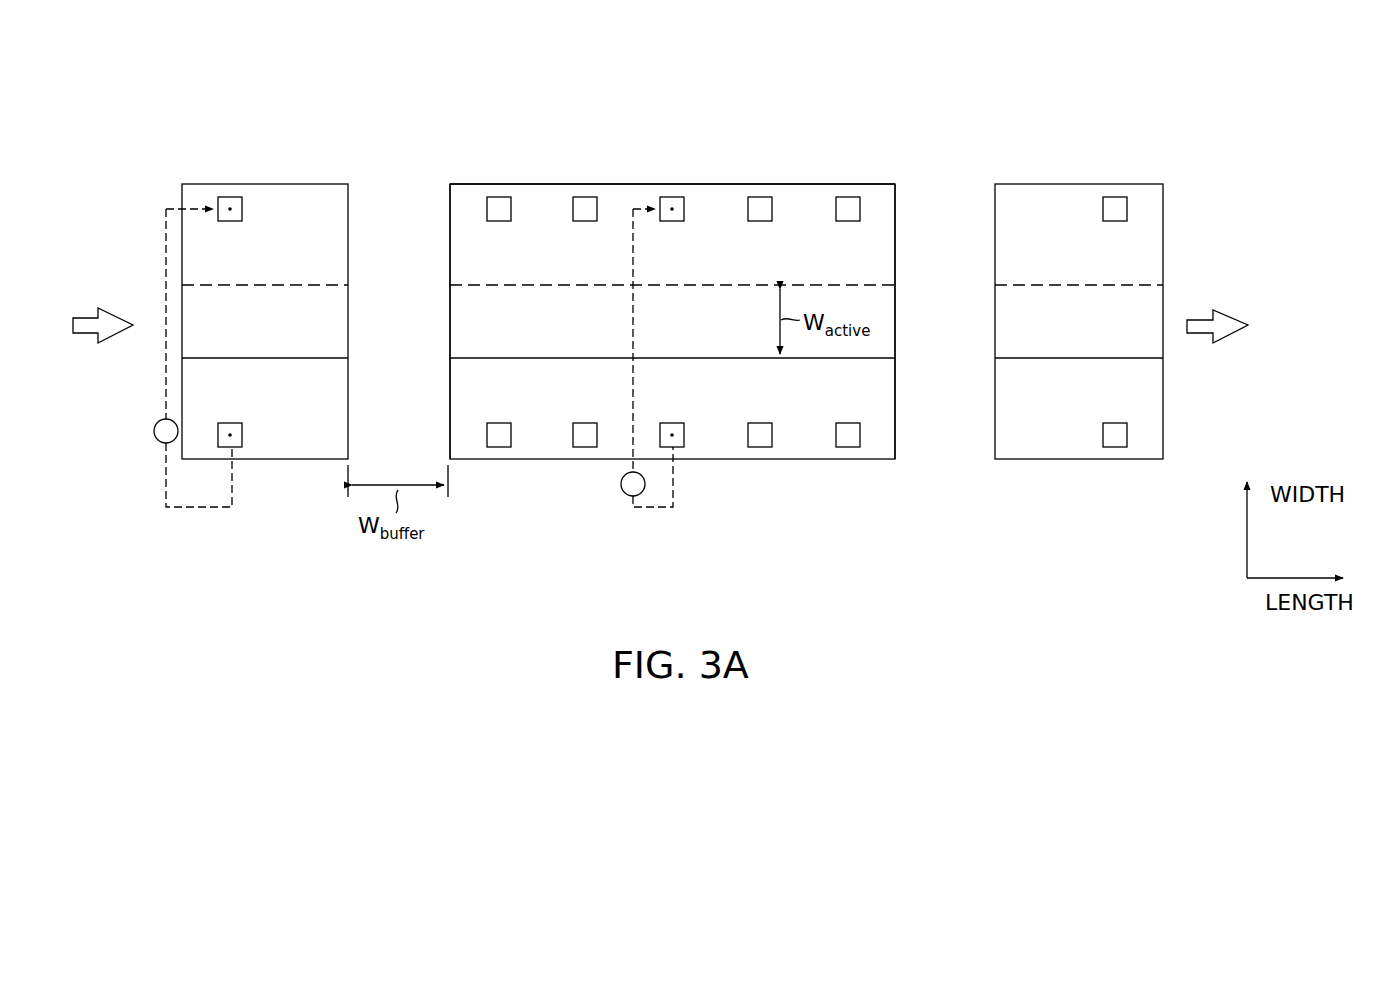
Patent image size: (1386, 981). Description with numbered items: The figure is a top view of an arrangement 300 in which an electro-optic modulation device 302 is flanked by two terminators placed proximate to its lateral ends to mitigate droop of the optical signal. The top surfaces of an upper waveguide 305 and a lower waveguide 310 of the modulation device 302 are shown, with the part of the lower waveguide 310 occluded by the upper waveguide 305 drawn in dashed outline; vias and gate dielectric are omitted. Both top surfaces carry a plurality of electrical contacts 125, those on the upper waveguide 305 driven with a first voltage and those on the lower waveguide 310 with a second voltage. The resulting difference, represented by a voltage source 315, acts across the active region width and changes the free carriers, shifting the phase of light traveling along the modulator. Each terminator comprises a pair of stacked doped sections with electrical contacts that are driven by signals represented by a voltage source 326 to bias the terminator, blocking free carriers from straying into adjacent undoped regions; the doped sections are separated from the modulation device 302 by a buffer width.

The arrangement 300 is at (1221, 80).
The modulation device 302 is at (696, 145).
The upper waveguide 305 is at (906, 195).
The lower waveguide 310 is at (904, 456).
The voltage source 315 is at (630, 496).
The electrical contacts 125 is at (499, 221).
The voltage source 326 is at (163, 443).